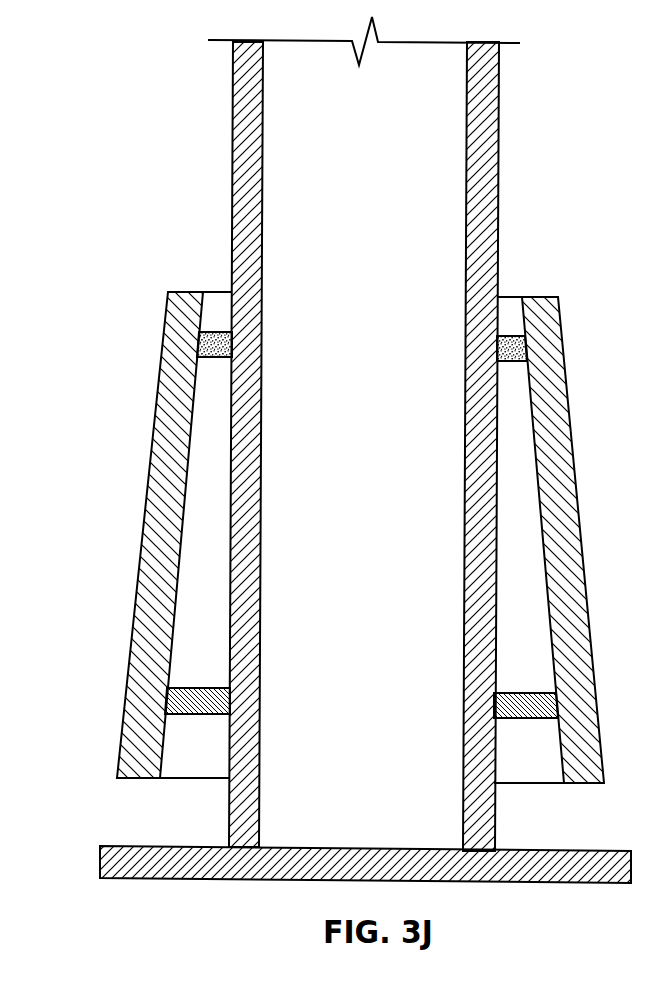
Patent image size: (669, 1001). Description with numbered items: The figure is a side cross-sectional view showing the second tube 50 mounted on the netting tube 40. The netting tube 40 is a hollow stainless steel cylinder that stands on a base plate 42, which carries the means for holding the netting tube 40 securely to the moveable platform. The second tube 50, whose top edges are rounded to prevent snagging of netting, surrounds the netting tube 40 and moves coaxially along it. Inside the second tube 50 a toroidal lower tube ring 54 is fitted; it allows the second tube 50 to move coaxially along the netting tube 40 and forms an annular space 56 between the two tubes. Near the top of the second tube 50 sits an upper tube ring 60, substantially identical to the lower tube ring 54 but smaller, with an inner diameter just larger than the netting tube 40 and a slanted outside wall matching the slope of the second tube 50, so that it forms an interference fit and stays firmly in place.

The netting tube 40 is at (233, 133).
The base plate 42 is at (543, 884).
The second tube 50 is at (135, 420).
The lower tube ring 54 is at (222, 688).
The annular space 56 is at (200, 796).
The upper tube ring 60 is at (217, 332).